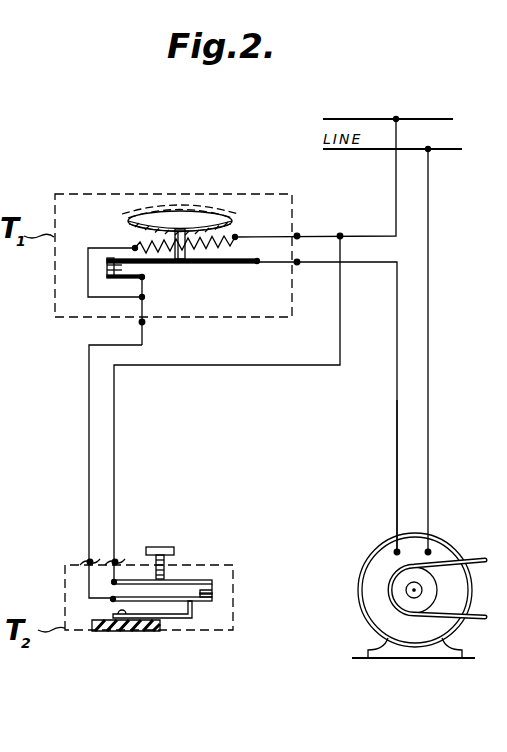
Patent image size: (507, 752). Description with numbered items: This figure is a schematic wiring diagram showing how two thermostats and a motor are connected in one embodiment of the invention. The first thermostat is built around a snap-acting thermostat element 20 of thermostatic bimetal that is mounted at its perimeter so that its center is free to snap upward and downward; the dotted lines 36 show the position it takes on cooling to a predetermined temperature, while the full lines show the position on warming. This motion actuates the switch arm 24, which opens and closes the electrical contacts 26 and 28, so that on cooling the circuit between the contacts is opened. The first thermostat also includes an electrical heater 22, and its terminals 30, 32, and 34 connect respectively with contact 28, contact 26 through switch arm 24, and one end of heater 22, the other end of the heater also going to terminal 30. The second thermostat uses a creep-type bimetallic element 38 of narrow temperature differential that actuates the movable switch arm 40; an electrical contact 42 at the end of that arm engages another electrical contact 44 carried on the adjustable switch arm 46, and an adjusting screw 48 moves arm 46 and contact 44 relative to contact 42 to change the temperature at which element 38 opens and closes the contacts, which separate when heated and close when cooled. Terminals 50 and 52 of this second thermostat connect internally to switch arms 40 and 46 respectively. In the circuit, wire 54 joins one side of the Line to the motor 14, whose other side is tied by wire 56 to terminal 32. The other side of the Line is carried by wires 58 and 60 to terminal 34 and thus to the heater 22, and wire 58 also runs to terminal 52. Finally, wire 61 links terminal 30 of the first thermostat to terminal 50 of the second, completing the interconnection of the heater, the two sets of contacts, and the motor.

The motor 14 is at (378, 562).
The snap-acting thermostat element 20 is at (135, 228).
The electrical heater 22 is at (237, 238).
The switch arm 24 is at (215, 264).
The electrical contact 26 is at (107, 265).
The electrical contact 28 is at (107, 278).
The terminal 30 is at (145, 324).
The terminal 32 is at (298, 263).
The terminal 34 is at (297, 236).
The dotted lines 36 is at (135, 213).
The creep-type bimetallic element 38 is at (170, 632).
The movable switch arm 40 is at (193, 602).
The electrical contact 42 is at (213, 597).
The electrical contact 44 is at (213, 587).
The adjustable switch arm 46 is at (183, 579).
The adjusting screw 48 is at (161, 547).
The terminal 50 is at (90, 562).
The terminal 52 is at (115, 562).
The wire 54 is at (428, 403).
The wire 56 is at (397, 403).
The wire 58 is at (396, 193).
The wire 60 is at (338, 237).
The wire 61 is at (89, 447).